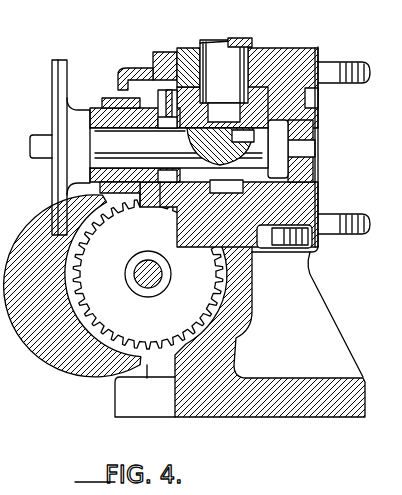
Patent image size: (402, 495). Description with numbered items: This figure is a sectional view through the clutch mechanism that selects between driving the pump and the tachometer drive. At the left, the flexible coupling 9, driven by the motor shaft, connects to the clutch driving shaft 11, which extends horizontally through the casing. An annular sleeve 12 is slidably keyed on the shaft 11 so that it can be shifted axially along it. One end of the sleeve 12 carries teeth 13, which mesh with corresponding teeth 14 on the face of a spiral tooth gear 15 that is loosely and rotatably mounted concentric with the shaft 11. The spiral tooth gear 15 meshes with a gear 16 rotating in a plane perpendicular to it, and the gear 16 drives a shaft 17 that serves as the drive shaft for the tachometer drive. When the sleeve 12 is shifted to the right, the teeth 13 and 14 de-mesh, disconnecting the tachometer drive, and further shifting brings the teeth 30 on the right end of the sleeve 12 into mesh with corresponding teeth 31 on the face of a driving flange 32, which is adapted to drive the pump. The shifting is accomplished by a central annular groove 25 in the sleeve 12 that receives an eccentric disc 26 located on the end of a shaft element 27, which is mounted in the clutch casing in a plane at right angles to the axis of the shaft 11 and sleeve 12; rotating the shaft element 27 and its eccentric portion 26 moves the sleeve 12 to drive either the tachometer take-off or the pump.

The flexible coupling 9 is at (63, 80).
The clutch driving shaft 11 is at (96, 140).
The annular sleeve 12 is at (211, 112).
The teeth 13 is at (232, 60).
The teeth 14 is at (120, 72).
The spiral tooth gear 15 is at (143, 200).
The gear 16 is at (68, 292).
The shaft 17 is at (136, 282).
The central annular groove 25 is at (196, 228).
The eccentric disc 26 is at (182, 132).
The shaft element 27 is at (238, 58).
The teeth 30 is at (262, 108).
The teeth 31 is at (320, 52).
The driving flange 32 is at (313, 124).